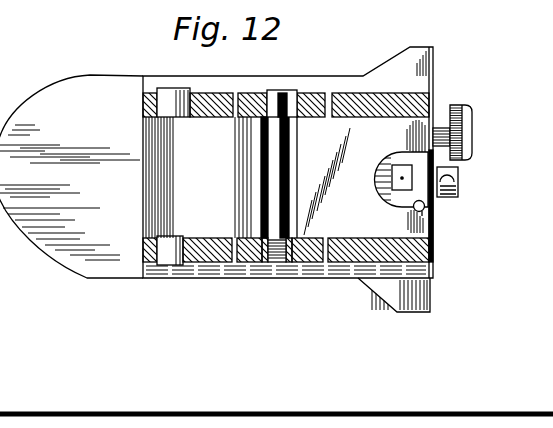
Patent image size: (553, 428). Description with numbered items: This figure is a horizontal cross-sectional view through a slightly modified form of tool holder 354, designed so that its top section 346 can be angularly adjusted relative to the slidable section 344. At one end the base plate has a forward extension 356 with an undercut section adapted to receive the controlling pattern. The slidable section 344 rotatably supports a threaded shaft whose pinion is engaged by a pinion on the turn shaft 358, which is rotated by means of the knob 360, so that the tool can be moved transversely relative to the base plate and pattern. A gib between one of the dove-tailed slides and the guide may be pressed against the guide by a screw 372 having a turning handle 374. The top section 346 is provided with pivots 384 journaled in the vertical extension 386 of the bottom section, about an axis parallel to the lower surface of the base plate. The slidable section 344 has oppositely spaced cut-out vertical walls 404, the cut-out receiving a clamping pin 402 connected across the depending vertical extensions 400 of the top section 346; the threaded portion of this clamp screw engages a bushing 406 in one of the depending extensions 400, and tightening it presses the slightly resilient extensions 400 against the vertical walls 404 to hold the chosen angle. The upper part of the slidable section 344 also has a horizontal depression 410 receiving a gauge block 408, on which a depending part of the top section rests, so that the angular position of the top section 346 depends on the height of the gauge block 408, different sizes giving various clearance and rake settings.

The slidable section 344 is at (185, 165).
The top section 346 is at (346, 93).
The tool holder 354 is at (225, 286).
The forward extension 356 is at (128, 60).
The turn shaft 358 is at (437, 112).
The knob 360 is at (470, 116).
The screw 372 is at (437, 185).
The turning handle 374 is at (460, 172).
The pivots 384 is at (168, 92).
The vertical extension 386 is at (197, 127).
The depending vertical extensions 400 is at (311, 97).
The clamping pin 402 is at (278, 176).
The cut-out vertical walls 404 is at (302, 140).
The bushing 406 is at (262, 262).
The gauge block 408 is at (391, 188).
The horizontal depression 410 is at (430, 217).